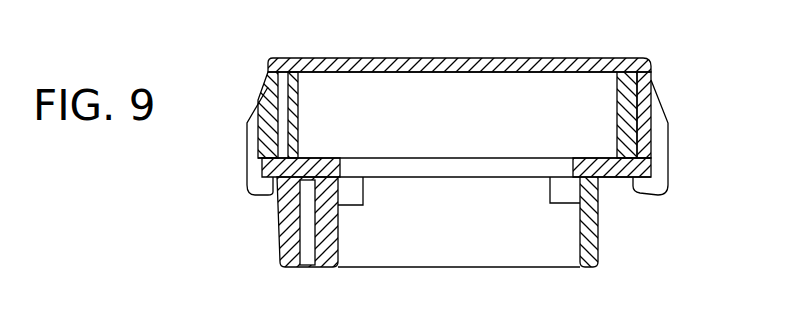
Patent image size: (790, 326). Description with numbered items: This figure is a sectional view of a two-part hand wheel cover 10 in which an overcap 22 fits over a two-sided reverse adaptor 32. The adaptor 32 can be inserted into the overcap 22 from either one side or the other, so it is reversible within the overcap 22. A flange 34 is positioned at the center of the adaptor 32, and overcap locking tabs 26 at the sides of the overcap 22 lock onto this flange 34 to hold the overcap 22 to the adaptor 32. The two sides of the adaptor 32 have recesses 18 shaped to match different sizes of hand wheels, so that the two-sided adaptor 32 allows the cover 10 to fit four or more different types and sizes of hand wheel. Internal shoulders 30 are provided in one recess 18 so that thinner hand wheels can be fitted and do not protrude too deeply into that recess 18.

The hand wheel cover 10 is at (489, 47).
The recess 18 is at (388, 86).
The overcap 22 is at (590, 62).
The overcap locking tab 26 is at (255, 140).
The internal shoulder 30 is at (353, 192).
The two-sided reverse adaptor 32 is at (632, 72).
The flange 34 is at (263, 172).